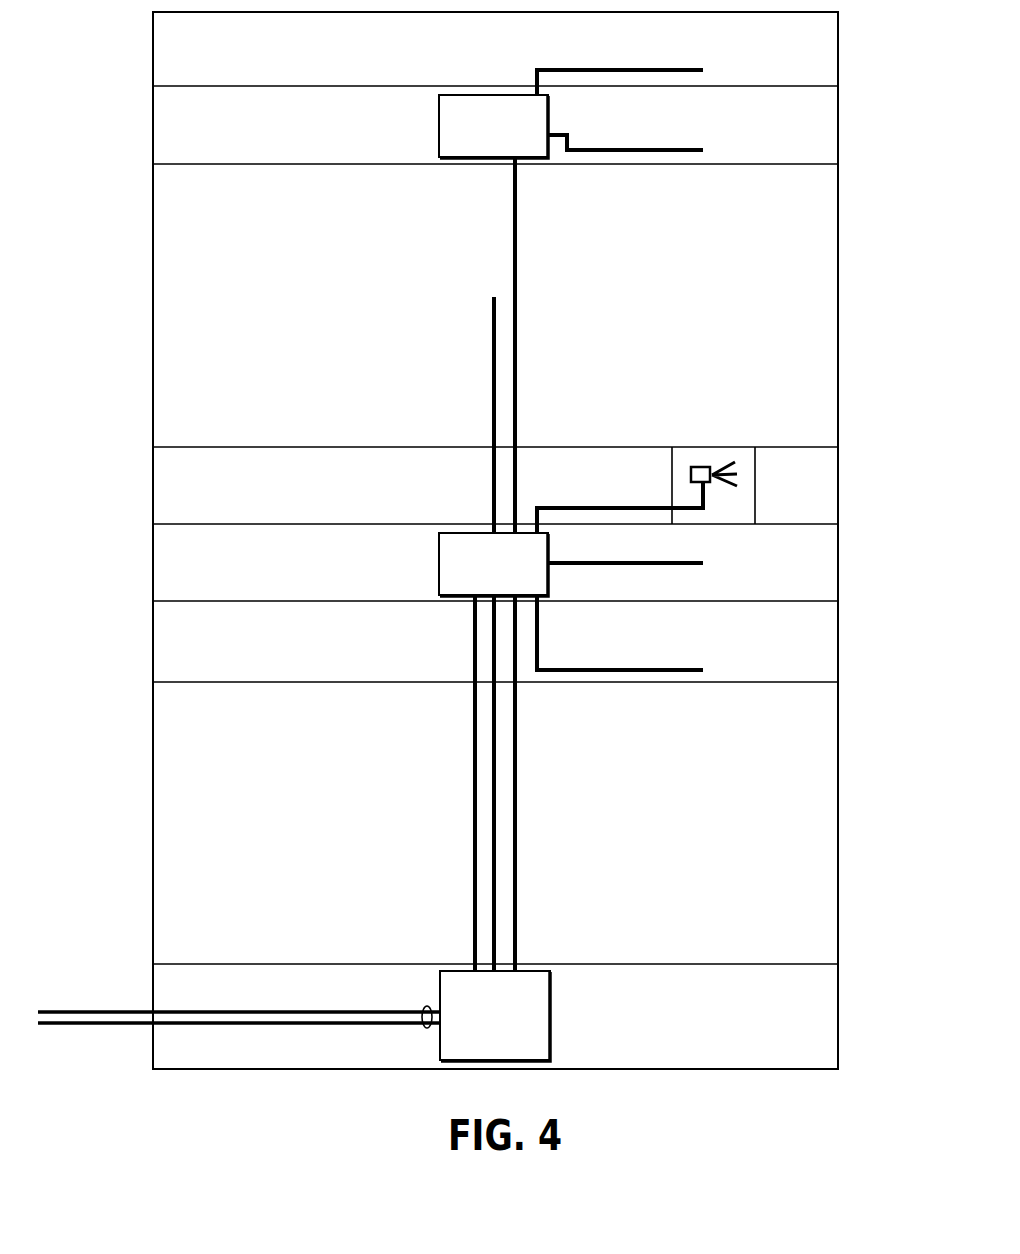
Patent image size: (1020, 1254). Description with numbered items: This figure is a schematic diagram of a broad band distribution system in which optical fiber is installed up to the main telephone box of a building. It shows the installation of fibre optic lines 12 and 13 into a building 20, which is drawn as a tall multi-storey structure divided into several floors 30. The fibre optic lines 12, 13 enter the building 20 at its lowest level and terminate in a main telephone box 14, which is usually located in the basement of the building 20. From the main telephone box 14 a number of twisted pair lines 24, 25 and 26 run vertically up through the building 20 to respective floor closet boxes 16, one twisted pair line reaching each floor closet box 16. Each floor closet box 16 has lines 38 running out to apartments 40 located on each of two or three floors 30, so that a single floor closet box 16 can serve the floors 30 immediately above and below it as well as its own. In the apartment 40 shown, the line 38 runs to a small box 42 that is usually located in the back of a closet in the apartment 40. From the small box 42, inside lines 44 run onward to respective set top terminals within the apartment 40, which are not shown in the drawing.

The fibre optic line 12 is at (82, 1010).
The fibre optic line 13 is at (63, 1025).
The main telephone box 14 is at (552, 1018).
The floor closet box 16 is at (438, 119).
The building 20 is at (840, 250).
The twisted pair line 24 is at (472, 846).
The twisted pair line 25 is at (497, 808).
The twisted pair line 26 is at (518, 233).
The floor 30 is at (228, 88).
The line 38 is at (683, 68).
The apartment 40 is at (757, 497).
The small box 42 is at (700, 466).
The inside line 44 is at (726, 462).